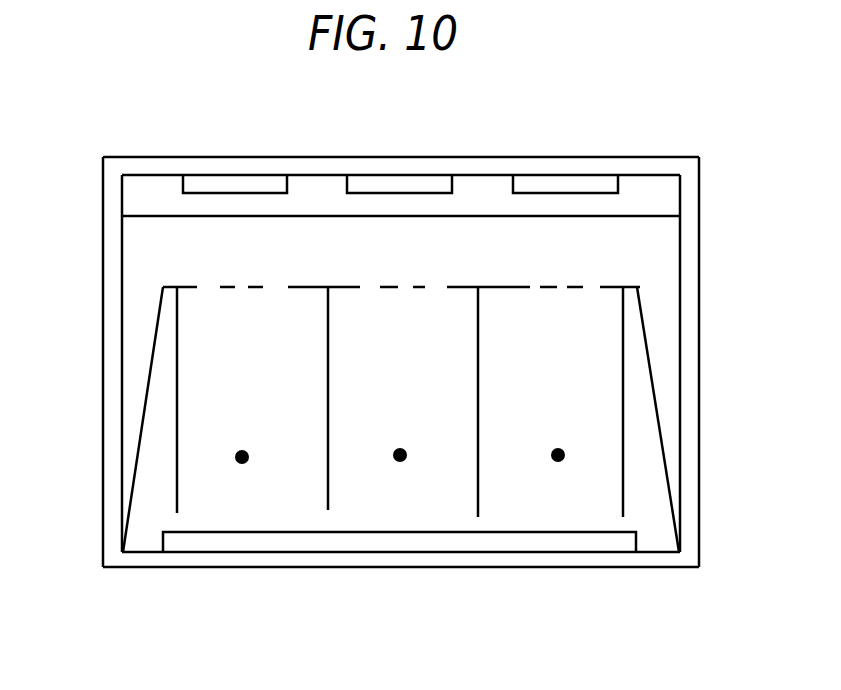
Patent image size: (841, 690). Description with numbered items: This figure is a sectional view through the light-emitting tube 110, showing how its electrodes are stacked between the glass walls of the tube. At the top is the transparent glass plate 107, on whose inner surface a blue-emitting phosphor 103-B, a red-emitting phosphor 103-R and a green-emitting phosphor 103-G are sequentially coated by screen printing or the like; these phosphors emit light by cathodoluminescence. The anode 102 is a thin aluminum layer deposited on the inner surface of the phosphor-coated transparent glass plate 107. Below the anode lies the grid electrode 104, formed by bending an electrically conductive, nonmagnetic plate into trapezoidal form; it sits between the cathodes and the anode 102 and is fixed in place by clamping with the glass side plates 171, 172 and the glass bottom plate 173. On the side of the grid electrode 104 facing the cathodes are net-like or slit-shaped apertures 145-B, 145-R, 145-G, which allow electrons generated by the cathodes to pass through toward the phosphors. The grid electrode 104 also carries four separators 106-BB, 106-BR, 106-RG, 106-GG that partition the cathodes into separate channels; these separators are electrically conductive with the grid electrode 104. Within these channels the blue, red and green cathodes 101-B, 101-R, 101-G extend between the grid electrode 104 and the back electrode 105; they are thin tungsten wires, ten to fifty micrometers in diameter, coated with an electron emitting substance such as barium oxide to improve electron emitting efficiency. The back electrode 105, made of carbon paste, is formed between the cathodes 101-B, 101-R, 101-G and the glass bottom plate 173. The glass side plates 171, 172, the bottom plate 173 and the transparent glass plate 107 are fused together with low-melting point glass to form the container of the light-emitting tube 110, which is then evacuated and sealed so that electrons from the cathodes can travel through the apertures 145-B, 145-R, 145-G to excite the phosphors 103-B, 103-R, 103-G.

The light-emitting tube 110 is at (637, 688).
The anode 102 is at (669, 203).
The blue-emitting phosphor 103-B is at (218, 177).
The red-emitting phosphor 103-R is at (371, 177).
The green-emitting phosphor 103-G is at (535, 177).
The grid electrode 104 is at (660, 418).
The back electrode 105 is at (241, 545).
The separator 106-BB is at (177, 490).
The separator 106-BR is at (328, 490).
The separator 106-RG is at (478, 495).
The separator 106-GG is at (623, 490).
The blue cathode 101-B is at (239, 463).
The red cathode 101-R is at (399, 462).
The green cathode 101-G is at (557, 463).
The transparent glass plate 107 is at (654, 169).
The aperture 145-B is at (291, 286).
The aperture 145-R is at (448, 286).
The aperture 145-G is at (602, 286).
The glass side plate 171 is at (688, 493).
The glass side plate 172 is at (102, 450).
The glass bottom plate 173 is at (670, 560).